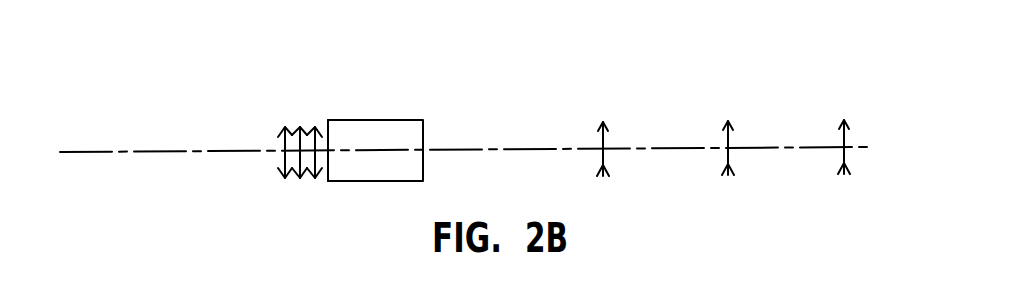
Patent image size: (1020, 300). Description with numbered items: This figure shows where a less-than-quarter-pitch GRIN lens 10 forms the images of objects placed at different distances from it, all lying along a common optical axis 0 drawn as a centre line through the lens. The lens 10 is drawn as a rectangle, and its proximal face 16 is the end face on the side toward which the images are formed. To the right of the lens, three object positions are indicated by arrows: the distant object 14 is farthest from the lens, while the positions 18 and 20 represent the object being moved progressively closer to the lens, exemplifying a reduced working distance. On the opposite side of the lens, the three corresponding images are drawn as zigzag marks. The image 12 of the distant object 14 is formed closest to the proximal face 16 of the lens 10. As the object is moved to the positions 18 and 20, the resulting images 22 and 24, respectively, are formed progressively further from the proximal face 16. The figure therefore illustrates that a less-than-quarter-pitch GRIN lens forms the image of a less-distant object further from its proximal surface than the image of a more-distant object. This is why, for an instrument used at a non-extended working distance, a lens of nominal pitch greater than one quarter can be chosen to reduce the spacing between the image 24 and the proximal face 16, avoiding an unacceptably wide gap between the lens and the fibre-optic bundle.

The optical axis 0 is at (518, 149).
The GRIN lens 10 is at (427, 131).
The image 12 is at (313, 127).
The distant object 14 is at (848, 127).
The proximal face 16 is at (328, 120).
The object position 18 is at (732, 127).
The object position 20 is at (606, 124).
The image 22 is at (298, 127).
The image 24 is at (285, 127).